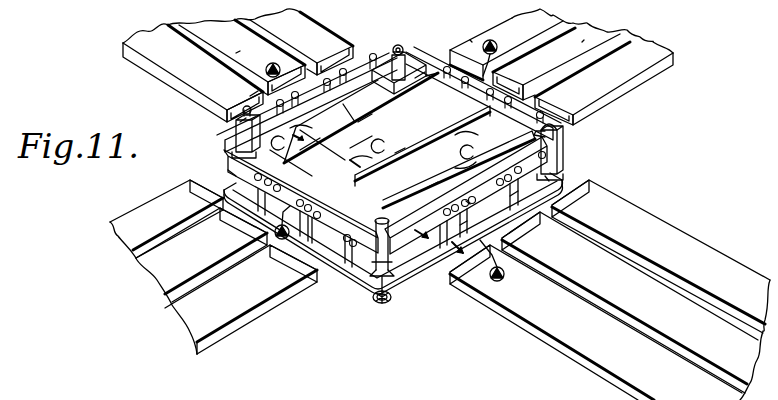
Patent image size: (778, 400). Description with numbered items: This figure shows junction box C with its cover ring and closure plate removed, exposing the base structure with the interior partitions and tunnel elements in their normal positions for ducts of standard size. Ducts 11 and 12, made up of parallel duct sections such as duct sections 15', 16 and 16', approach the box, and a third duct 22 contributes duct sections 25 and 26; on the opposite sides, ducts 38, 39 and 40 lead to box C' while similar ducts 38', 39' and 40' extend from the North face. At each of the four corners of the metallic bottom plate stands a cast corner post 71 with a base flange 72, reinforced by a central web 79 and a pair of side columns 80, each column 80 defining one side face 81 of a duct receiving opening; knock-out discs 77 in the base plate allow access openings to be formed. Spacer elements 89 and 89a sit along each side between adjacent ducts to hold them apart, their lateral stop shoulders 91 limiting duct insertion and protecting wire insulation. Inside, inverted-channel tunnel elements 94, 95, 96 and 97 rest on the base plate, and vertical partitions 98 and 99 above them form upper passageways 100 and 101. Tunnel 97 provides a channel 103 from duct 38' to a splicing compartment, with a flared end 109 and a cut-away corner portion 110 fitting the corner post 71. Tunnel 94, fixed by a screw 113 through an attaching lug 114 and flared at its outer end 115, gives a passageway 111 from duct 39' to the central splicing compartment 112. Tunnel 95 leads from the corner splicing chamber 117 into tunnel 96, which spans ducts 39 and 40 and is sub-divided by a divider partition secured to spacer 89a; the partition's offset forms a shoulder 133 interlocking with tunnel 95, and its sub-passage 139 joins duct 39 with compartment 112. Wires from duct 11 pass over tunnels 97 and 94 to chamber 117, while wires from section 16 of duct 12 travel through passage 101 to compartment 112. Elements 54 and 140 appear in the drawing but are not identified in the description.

The duct 11 is at (471, 33).
The duct 12 is at (589, 40).
The duct section 15' is at (336, 114).
The duct section 16 is at (570, 55).
The duct section 16' is at (174, 255).
The third duct 22 is at (662, 72).
The duct section 25 is at (603, 85).
The duct section 26 is at (190, 317).
The duct 38 is at (661, 254).
The duct 38' is at (294, 33).
The duct 39 is at (630, 302).
The duct 39' is at (188, 78).
The duct 40 is at (596, 322).
The duct 40' is at (180, 73).
The bolt 54 is at (380, 303).
The corner post 71 is at (393, 48).
The base flange 72 is at (392, 272).
The knock-out discs 77 is at (368, 150).
The central web 79 is at (374, 268).
The side columns 80 is at (222, 163).
The side face 81 is at (551, 186).
The spacer element 89 is at (256, 200).
The spacer element 89a is at (464, 228).
The lateral stop shoulders 91 is at (464, 196).
The tunnel element 94 is at (337, 126).
The tunnel element 95 is at (335, 180).
The tunnel element 96 is at (426, 183).
The tunnel element 97 is at (420, 78).
The vertical partition 98 is at (361, 114).
The vertical partition 99 is at (413, 147).
The upper passageway 100 is at (388, 100).
The upper passageway 101 is at (450, 112).
The channel 103 is at (482, 128).
The flared end 109 is at (365, 80).
The corner portion 110 is at (412, 50).
The passageway 111 is at (318, 166).
The splicing compartment 112 is at (459, 167).
The screw 113 is at (257, 95).
The attaching lug 114 is at (240, 125).
The outer end 115 is at (318, 105).
The corner splicing chamber 117 is at (217, 175).
The shoulder 133 is at (444, 248).
The sub-division passageway 139 is at (512, 197).
The foot bolt 140 is at (390, 303).